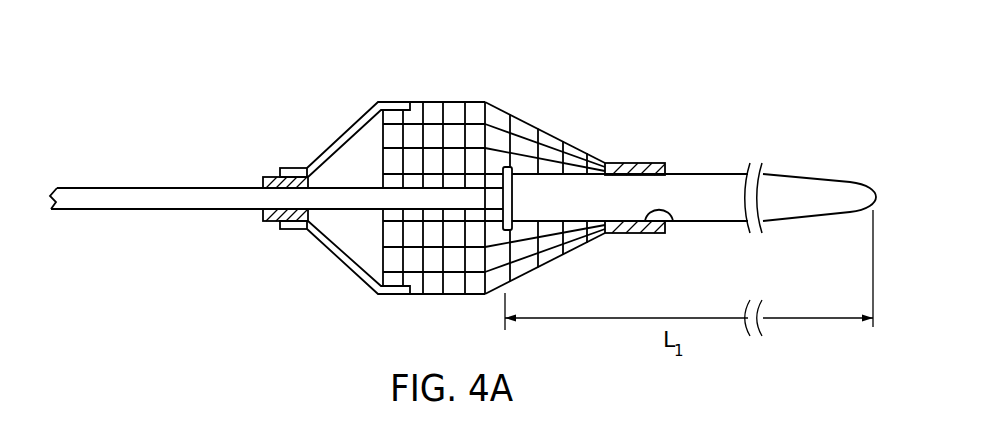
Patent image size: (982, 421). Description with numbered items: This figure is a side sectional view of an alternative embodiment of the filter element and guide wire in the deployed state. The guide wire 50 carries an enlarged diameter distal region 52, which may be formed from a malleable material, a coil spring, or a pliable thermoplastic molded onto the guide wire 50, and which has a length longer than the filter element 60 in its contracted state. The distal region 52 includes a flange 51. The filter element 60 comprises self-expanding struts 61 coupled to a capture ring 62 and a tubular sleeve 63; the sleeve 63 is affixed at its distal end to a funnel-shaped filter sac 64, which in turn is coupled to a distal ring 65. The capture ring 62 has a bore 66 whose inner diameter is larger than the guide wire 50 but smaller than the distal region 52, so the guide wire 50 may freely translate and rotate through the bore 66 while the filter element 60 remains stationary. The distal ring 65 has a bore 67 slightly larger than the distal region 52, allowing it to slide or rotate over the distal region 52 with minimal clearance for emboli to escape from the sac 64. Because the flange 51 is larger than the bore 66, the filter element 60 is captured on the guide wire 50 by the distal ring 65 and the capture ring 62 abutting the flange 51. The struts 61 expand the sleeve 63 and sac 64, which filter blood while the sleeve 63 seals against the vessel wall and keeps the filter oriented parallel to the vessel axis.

The guide wire 50 is at (104, 210).
The flange 51 is at (508, 198).
The enlarged diameter distal region 52 is at (712, 190).
The filter element 60 is at (570, 81).
The self-expanding struts 61 is at (341, 134).
The capture ring 62 is at (267, 176).
The tubular sleeve 63 is at (435, 108).
The funnel-shaped filter sac 64 is at (547, 142).
The distal ring 65 is at (632, 163).
The bore 66 is at (262, 213).
The bore 67 is at (673, 221).